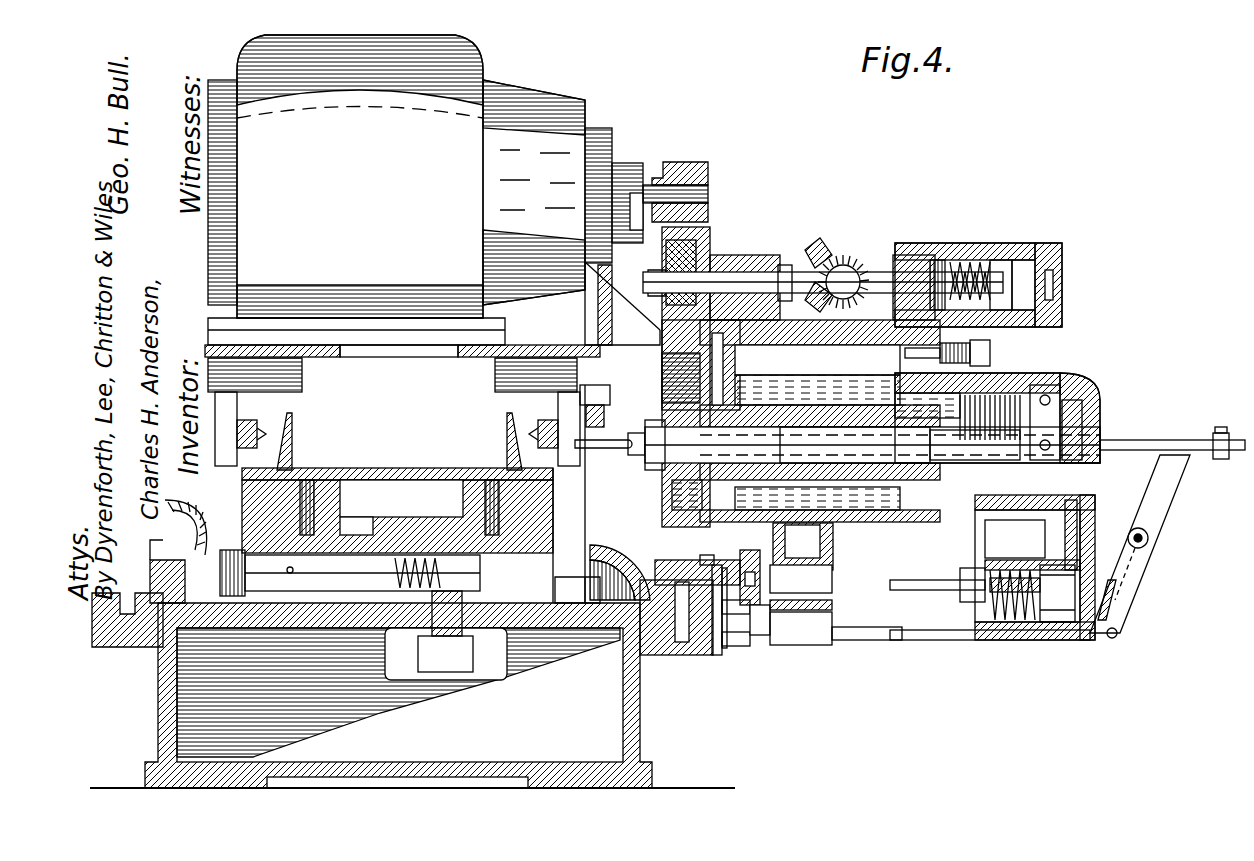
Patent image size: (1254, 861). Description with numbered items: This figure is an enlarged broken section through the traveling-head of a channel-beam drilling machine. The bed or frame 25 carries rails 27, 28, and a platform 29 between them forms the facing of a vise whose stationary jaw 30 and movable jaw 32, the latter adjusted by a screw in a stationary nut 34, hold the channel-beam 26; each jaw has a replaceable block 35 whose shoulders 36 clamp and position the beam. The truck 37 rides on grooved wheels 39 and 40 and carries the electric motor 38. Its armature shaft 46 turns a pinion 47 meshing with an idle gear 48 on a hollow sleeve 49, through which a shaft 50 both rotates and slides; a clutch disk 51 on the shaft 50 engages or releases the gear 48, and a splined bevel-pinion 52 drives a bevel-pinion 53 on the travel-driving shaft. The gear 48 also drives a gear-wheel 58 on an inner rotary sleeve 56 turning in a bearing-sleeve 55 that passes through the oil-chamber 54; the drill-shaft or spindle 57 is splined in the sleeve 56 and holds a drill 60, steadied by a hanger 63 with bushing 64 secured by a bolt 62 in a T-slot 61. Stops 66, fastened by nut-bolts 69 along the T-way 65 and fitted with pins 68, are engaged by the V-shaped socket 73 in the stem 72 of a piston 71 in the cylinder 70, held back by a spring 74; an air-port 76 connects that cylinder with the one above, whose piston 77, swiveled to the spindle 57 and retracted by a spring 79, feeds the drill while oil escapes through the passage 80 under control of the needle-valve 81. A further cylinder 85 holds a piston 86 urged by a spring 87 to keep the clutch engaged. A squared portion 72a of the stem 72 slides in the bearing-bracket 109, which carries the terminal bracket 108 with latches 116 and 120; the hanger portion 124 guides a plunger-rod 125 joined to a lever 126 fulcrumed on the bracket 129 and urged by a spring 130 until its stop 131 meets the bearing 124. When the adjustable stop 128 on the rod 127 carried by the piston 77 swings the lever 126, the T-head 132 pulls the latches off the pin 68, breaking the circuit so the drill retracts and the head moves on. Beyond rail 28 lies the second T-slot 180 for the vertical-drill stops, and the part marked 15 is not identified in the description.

The clutch housing 15 is at (998, 393).
The bed or frame 25 is at (640, 722).
The channel-beam 26 is at (383, 468).
The rail 27 is at (570, 586).
The rail 28 is at (185, 577).
The platform 29 is at (300, 627).
The stationary jaw 30 is at (553, 497).
The movable jaw 32 is at (250, 512).
The stationary nut 34 is at (470, 620).
The block 35 is at (463, 495).
The shoulders 36 is at (292, 456).
The frame or truck 37 is at (535, 350).
The electric motor 38 is at (425, 190).
The grooved wheels 39 is at (350, 595).
The grooved wheels 40 is at (175, 540).
The armature shaft 46 is at (708, 196).
The pinion 47 is at (685, 175).
The idle gear 48 is at (705, 245).
The hollow stub-shaft or sleeve 49 is at (745, 272).
The shaft 50 is at (888, 272).
The clutch-member or disk 51 is at (666, 258).
The bevel-pinion 52 is at (818, 245).
The bevel-pinion 53 is at (845, 255).
The oil-chamber 54 is at (801, 377).
The bearing-sleeve 55 is at (855, 444).
The inner rotary sleeve 56 is at (872, 445).
The drill-shaft or spindle 57 is at (975, 442).
The gear-wheel 58 is at (662, 372).
The drill 60 is at (620, 448).
The T-slot 61 is at (302, 368).
The bolt 62 is at (605, 412).
The hanger or guide-piece 63 is at (237, 400).
The bushing 64 is at (397, 423).
The T-way 65 is at (685, 655).
The stop 66 is at (707, 565).
The lug or pin 68 is at (726, 650).
The nut-bolt 69 is at (655, 598).
The cylinder 70 is at (1035, 640).
The piston 71 is at (1060, 622).
The stem or plunger 72 is at (908, 580).
The squared portion 72a is at (840, 575).
The V-shaped socket 73 is at (756, 565).
The spring 74 is at (1005, 622).
The air-port 76 is at (1080, 520).
The piston 77 is at (1052, 385).
The spring 79 is at (1015, 395).
The oil-escape passage 80 is at (817, 431).
The needle-valve 81 is at (968, 352).
The cylinder 85 is at (995, 262).
The piston 86 is at (1020, 262).
The spring 87 is at (958, 243).
The bracket 108 is at (832, 606).
The bearing-bracket 109 is at (833, 535).
The latch 116 is at (746, 621).
The latch 120 is at (722, 645).
The hanger portion 124 is at (815, 635).
The plunger-rod 125 is at (945, 640).
The lever 126 is at (1160, 520).
The rod 127 is at (1172, 440).
The adjustable stop 128 is at (1220, 460).
The bracket 129 is at (1148, 545).
The spring 130 is at (1120, 610).
The stop 131 is at (845, 640).
The T-shaped head 132 is at (760, 640).
The T-slot 180 is at (125, 630).